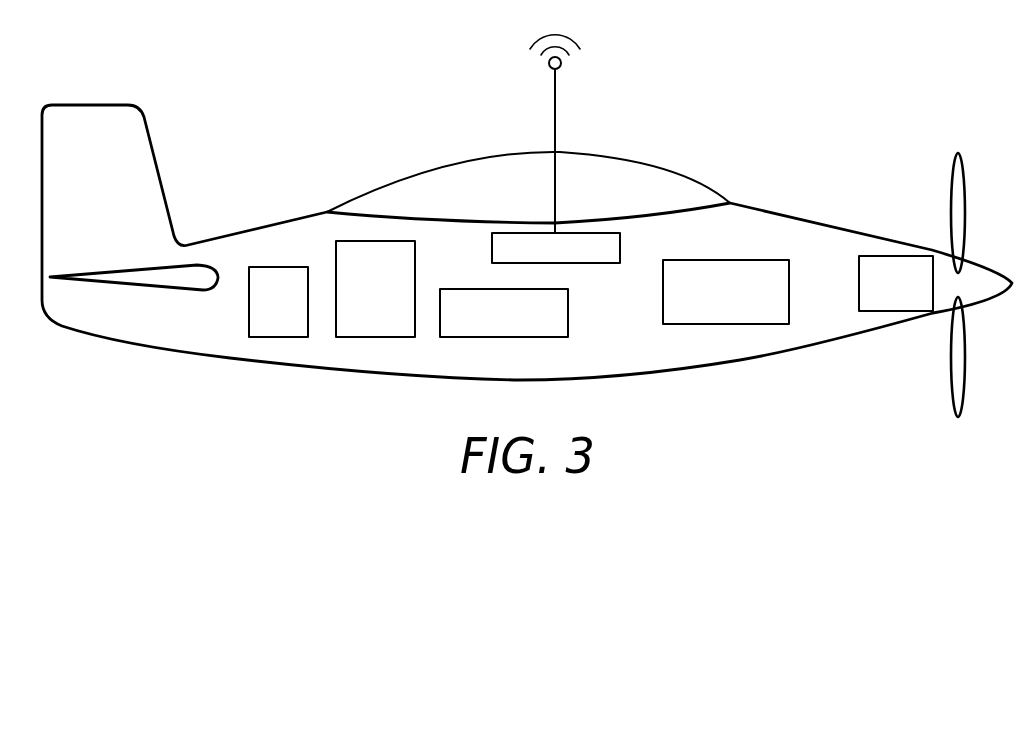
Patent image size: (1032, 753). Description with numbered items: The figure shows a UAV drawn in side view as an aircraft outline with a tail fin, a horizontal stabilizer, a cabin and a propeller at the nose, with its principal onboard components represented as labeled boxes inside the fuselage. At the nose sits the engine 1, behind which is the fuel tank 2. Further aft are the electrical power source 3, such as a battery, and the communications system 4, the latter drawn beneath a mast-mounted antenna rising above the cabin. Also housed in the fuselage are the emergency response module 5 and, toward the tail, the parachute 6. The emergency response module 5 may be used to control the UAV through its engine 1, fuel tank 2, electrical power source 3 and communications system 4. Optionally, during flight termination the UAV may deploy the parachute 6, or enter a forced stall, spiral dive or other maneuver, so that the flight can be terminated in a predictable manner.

The engine 1 is at (880, 311).
The fuel tank 2 is at (773, 324).
The electrical power source 3 is at (553, 337).
The communications system 4 is at (601, 263).
The emergency response module 5 is at (396, 337).
The parachute 6 is at (291, 337).